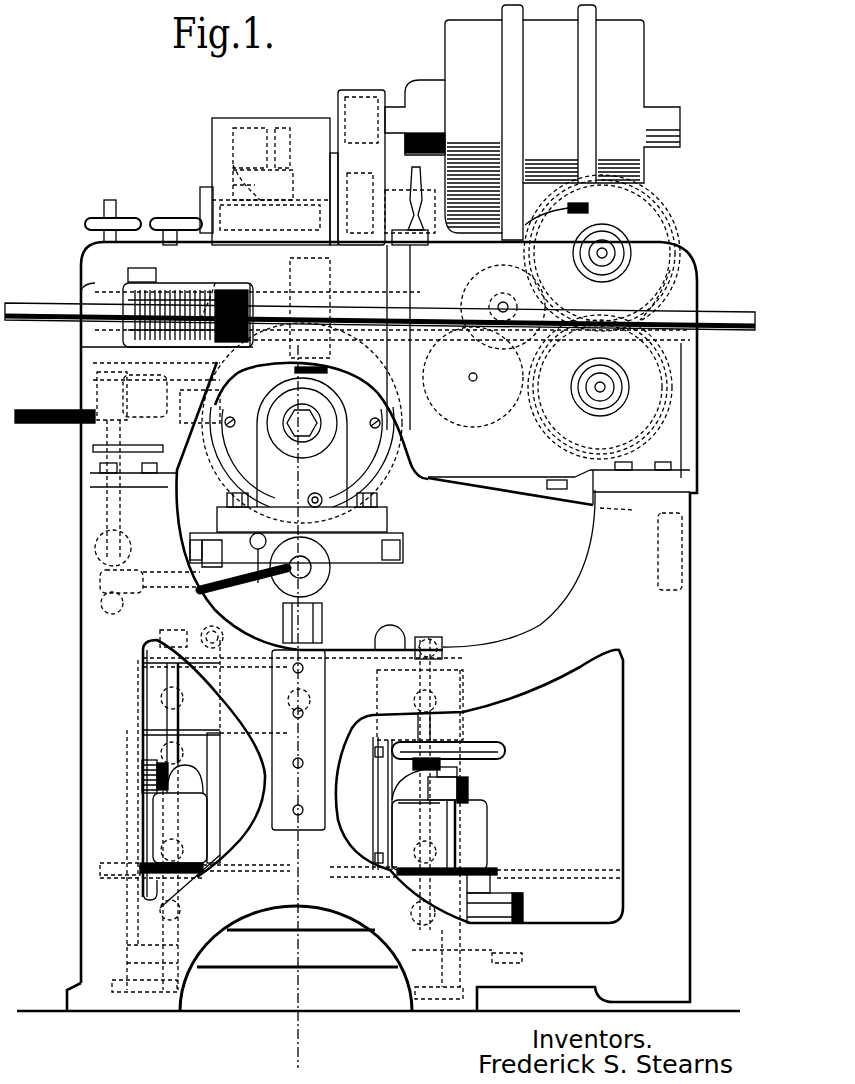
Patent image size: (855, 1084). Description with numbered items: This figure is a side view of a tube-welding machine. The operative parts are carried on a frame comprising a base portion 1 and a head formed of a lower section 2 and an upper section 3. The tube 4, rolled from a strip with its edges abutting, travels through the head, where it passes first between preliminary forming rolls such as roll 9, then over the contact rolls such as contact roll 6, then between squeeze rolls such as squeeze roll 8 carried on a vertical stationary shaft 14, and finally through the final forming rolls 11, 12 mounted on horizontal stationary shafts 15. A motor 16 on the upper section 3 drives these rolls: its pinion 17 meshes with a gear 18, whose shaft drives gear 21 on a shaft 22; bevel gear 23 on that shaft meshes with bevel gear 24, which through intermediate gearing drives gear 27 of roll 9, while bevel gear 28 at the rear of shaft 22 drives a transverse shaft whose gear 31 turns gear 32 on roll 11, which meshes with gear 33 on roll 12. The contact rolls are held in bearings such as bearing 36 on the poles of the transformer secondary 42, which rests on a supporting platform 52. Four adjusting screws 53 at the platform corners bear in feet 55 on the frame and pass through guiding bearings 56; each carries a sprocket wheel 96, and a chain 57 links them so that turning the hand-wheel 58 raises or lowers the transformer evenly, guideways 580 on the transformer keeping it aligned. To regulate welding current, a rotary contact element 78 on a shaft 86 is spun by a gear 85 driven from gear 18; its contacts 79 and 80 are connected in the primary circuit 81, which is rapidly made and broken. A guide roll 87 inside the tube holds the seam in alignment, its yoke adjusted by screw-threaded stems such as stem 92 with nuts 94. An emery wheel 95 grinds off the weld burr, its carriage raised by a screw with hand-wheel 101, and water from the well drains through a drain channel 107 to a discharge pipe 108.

The base portion 1 is at (85, 770).
The lower head section 2 is at (663, 447).
The upper head section 3 is at (290, 376).
The tube 4 is at (55, 303).
The contact roll 6 is at (378, 478).
The squeeze roll 8 is at (251, 290).
The preliminary forming roll 9 is at (85, 288).
The final forming roll 11 is at (680, 235).
The final forming roll 12 is at (663, 372).
The stationary shaft 14 is at (322, 303).
The stationary shaft 15 is at (602, 253).
The motor 16 is at (456, 50).
The pinion 17 is at (367, 98).
The gear 18 is at (340, 147).
The gear 21 is at (410, 290).
The shaft 22 is at (428, 345).
The bevel gear 23 is at (215, 283).
The bevel gear 24 is at (123, 330).
The gear 27 is at (100, 352).
The bevel gear 28 is at (460, 295).
The gear 31 is at (475, 265).
The gear 32 is at (672, 270).
The gear 33 is at (667, 400).
The bearing 36 is at (338, 447).
The secondary 42 is at (368, 620).
The supporting platform 52 is at (367, 963).
The adjusting screw 53 is at (143, 807).
The foot 55 is at (100, 985).
The guiding bearing 56 is at (143, 775).
The chain 57 is at (400, 868).
The hand-wheel 58 is at (502, 742).
The rotary contact element 78 is at (233, 185).
The contact 79 is at (233, 165).
The contact 80 is at (283, 118).
The primary circuit 81 is at (50, 412).
The gear 85 is at (412, 192).
The shaft 86 is at (212, 200).
The guide roll 87 is at (146, 283).
The screw-threaded stem 92 is at (108, 205).
The nut 94 is at (90, 228).
The grinding tool 95 is at (480, 423).
The sprocket wheel 96 is at (150, 852).
The hand-wheel 101 is at (612, 205).
The drain channel 107 is at (578, 502).
The discharge pipe 108 is at (683, 553).
The guideway 580 is at (305, 622).